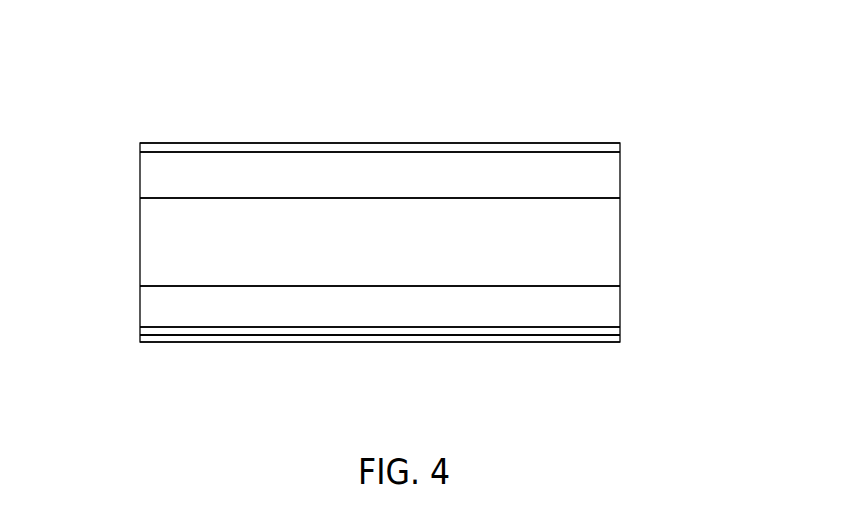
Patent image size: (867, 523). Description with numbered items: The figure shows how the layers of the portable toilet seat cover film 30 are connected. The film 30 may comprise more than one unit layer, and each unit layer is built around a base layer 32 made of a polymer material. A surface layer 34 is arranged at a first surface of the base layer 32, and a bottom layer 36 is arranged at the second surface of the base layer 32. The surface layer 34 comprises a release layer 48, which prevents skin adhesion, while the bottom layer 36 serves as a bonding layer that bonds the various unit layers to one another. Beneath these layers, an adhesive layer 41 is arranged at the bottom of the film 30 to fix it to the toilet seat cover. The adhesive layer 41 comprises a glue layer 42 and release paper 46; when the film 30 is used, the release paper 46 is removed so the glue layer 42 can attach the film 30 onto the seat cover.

The film 30 is at (645, 232).
The release layer 48 is at (352, 143).
The surface layer 34 is at (203, 170).
The base layer 32 is at (552, 247).
The bottom layer 36 is at (553, 312).
The glue layer 42 is at (157, 328).
The release paper 46 is at (228, 338).
The adhesive layer 41 is at (622, 335).